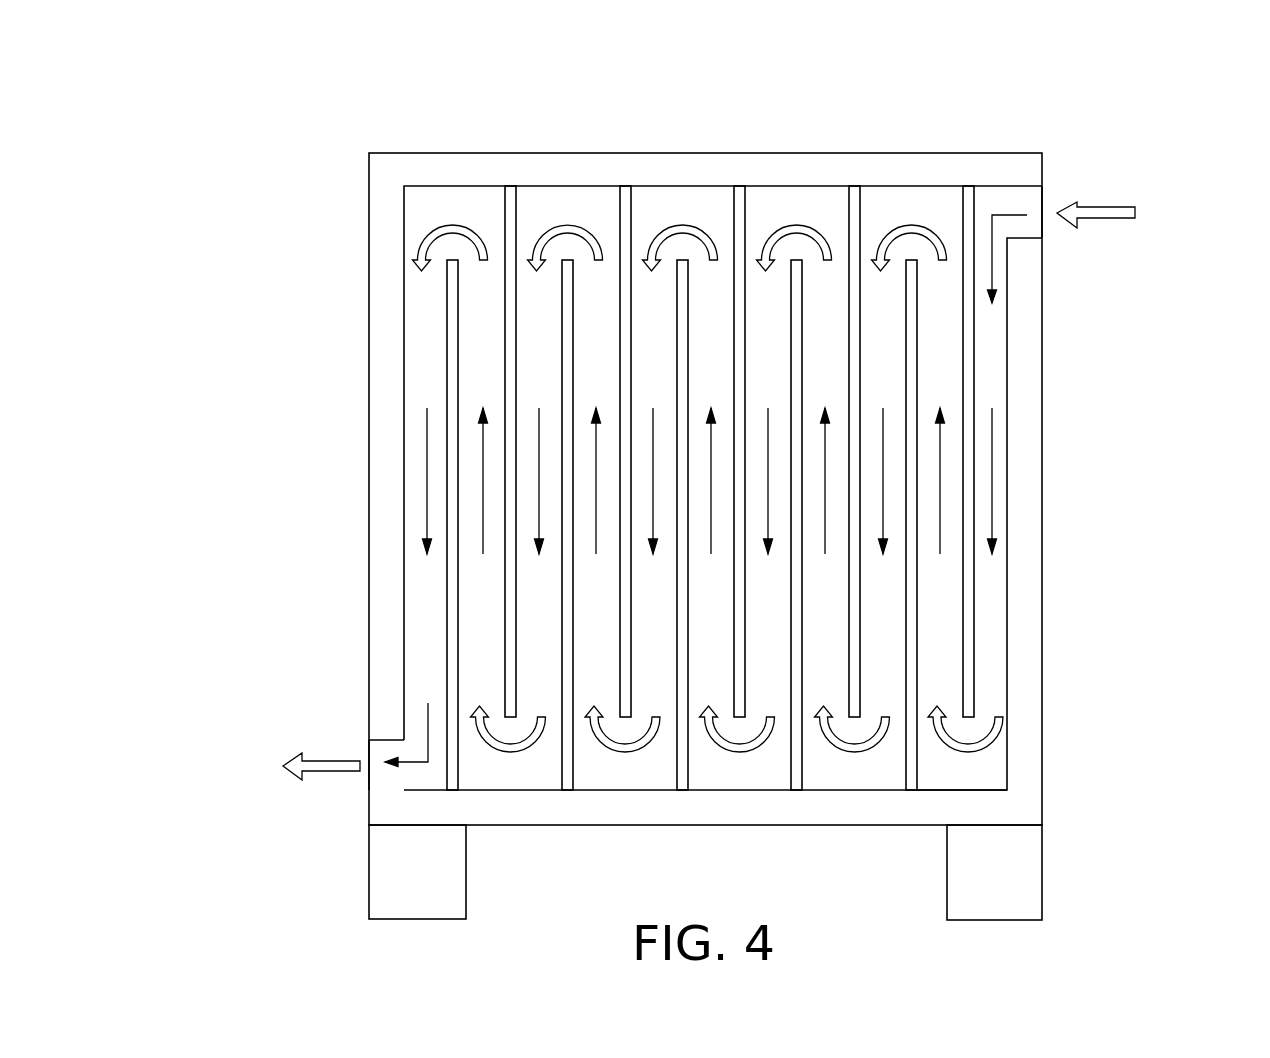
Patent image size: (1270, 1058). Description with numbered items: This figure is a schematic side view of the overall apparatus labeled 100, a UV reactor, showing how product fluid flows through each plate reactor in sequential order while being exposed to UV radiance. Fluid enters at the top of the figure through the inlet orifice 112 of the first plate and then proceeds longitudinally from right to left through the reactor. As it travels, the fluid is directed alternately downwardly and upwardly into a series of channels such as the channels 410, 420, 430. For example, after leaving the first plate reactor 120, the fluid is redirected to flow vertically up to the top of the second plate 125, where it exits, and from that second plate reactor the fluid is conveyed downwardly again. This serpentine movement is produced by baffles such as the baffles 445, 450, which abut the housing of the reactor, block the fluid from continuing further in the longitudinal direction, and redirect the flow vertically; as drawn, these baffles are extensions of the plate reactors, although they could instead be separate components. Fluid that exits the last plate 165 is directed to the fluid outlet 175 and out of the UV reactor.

The heat exchanger 100 is at (236, 112).
The inlet orifice 112 is at (1043, 200).
The first plate reactor 120 is at (973, 473).
The second plate 125 is at (917, 628).
The last plate 165 is at (447, 317).
The fluid outlet 175 is at (368, 752).
The channel 410 is at (993, 372).
The channel 420 is at (832, 294).
The channel 430 is at (762, 320).
The baffle 445 is at (917, 780).
The baffle 450 is at (618, 211).